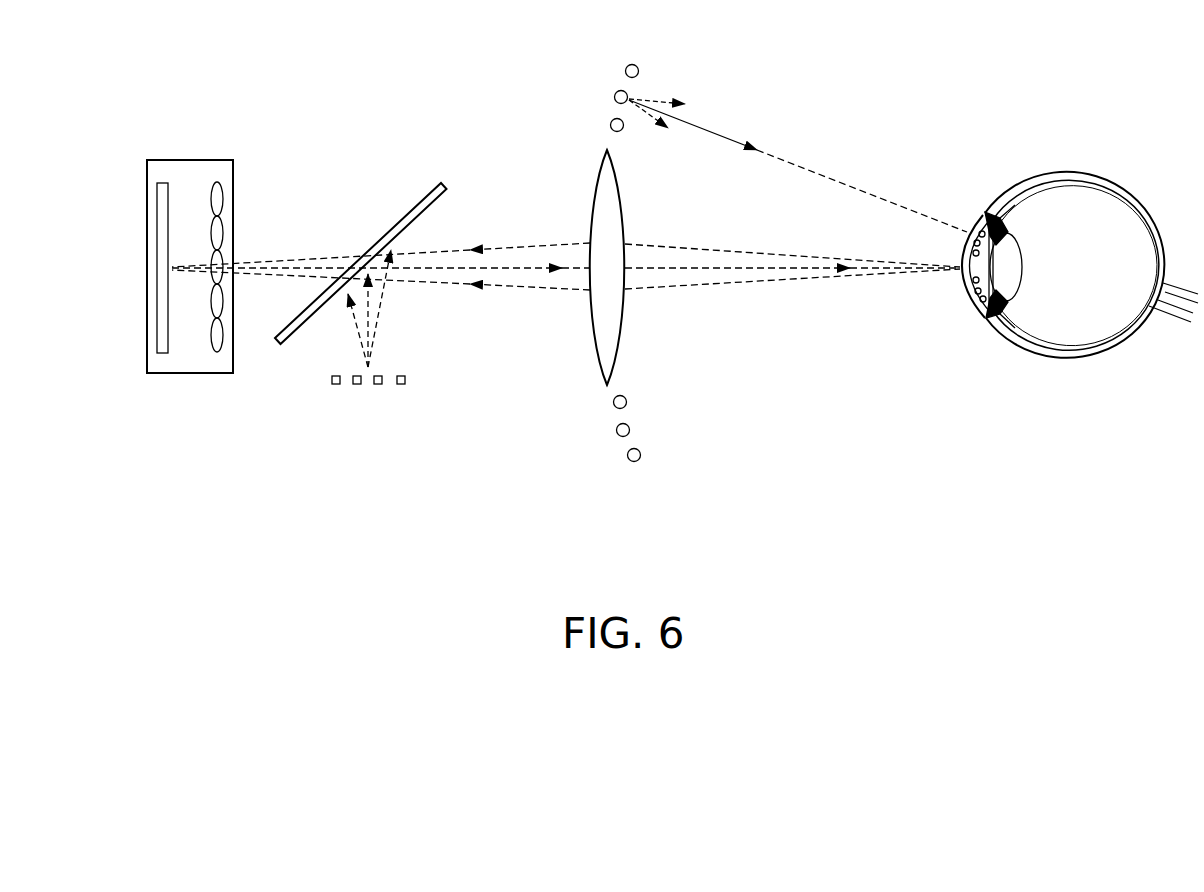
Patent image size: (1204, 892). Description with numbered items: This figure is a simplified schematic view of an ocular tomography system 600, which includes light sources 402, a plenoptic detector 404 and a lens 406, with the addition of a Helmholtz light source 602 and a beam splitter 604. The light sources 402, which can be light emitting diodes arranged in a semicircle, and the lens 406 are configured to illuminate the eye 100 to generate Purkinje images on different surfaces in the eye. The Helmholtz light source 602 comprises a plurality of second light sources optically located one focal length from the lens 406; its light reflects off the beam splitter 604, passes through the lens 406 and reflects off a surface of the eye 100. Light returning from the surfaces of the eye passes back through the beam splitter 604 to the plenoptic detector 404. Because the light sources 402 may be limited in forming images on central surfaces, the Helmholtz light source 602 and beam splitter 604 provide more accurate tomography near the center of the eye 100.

The eye 100 is at (1085, 398).
The light sources 402 is at (600, 85).
The plenoptic detector 404 is at (183, 373).
The lens 406 is at (603, 379).
The ocular tomography system 600 is at (648, 542).
The Helmholtz light source 602 is at (379, 385).
The beam splitter 604 is at (421, 187).